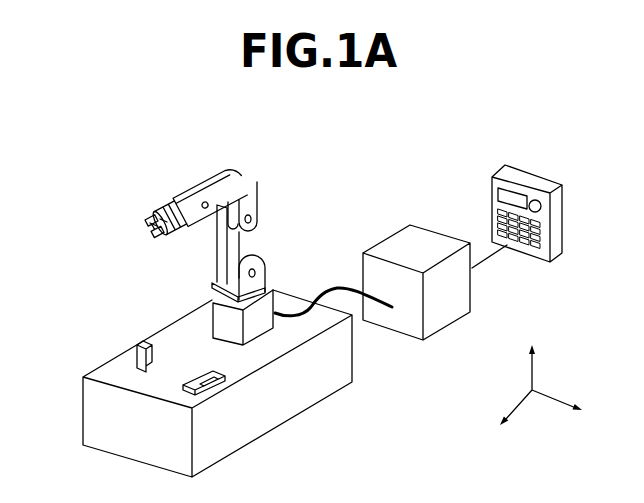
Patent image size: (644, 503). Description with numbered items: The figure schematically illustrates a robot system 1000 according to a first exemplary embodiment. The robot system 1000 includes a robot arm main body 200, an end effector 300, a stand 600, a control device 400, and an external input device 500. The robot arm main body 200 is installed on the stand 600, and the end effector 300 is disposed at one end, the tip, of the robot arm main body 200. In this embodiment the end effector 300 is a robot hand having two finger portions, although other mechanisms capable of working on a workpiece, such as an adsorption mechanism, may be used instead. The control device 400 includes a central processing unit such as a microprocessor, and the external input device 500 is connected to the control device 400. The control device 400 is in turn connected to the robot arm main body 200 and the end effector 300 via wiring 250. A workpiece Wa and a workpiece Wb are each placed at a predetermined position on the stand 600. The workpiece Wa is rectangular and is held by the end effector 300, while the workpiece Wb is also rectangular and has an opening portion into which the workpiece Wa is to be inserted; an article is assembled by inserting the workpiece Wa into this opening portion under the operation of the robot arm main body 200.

The robot system 1000 is at (173, 114).
The robot arm main body 200 is at (277, 159).
The end effector 300 is at (134, 202).
The wiring 250 is at (333, 287).
The control device 400 is at (420, 242).
The external input device 500 is at (526, 178).
The stand 600 is at (305, 395).
The workpiece Wa is at (145, 339).
The workpiece Wb is at (213, 379).